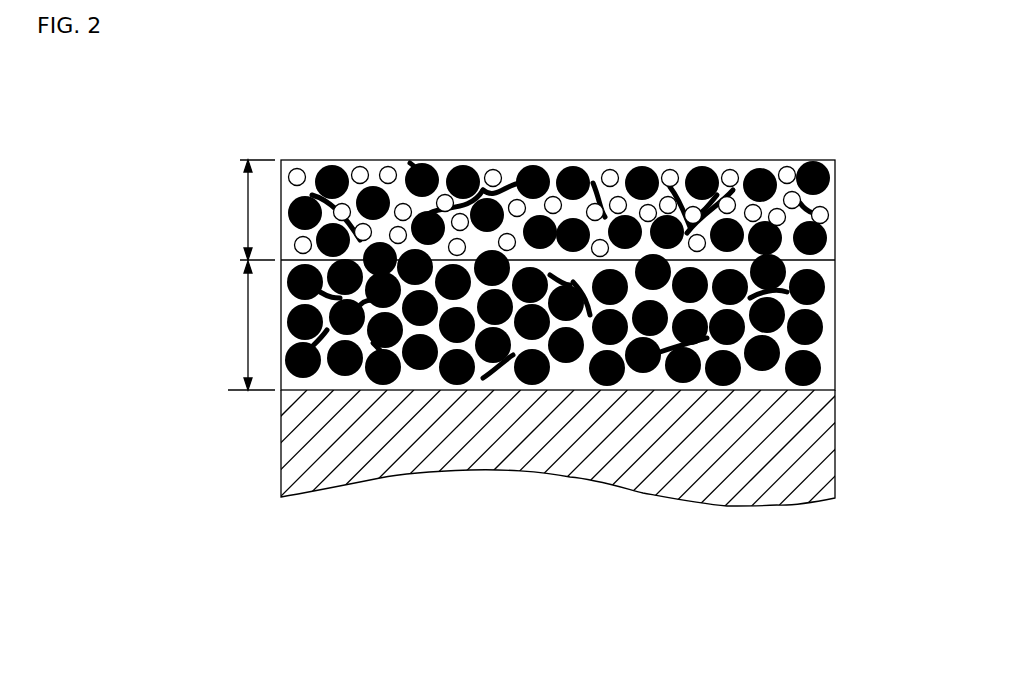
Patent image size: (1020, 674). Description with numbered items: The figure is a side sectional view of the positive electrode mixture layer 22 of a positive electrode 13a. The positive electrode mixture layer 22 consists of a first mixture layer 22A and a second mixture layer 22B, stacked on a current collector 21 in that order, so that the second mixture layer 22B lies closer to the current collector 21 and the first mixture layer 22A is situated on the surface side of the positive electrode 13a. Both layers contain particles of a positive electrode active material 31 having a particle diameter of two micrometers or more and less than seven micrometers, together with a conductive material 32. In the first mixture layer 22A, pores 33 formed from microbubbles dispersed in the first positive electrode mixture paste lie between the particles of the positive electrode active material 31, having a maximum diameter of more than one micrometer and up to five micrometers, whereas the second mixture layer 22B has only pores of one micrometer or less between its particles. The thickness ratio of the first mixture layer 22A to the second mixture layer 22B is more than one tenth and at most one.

The positive electrode 13a is at (226, 431).
The current collector 21 is at (835, 445).
The positive electrode mixture layer 22 is at (840, 160).
The first mixture layer 22A is at (176, 210).
The second mixture layer 22B is at (166, 325).
The positive electrode active material 31 is at (642, 163).
The conductive material 32 is at (418, 160).
The pores 33 is at (300, 167).